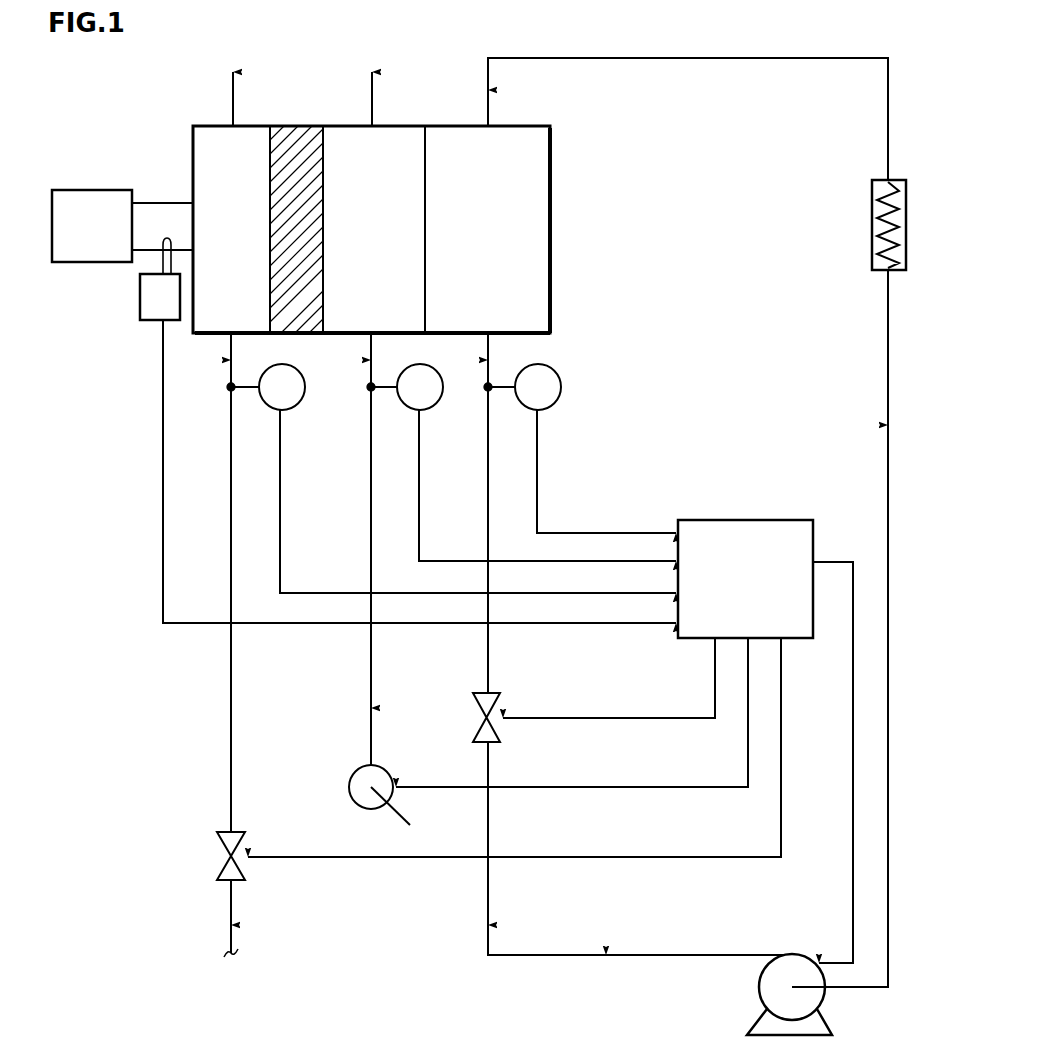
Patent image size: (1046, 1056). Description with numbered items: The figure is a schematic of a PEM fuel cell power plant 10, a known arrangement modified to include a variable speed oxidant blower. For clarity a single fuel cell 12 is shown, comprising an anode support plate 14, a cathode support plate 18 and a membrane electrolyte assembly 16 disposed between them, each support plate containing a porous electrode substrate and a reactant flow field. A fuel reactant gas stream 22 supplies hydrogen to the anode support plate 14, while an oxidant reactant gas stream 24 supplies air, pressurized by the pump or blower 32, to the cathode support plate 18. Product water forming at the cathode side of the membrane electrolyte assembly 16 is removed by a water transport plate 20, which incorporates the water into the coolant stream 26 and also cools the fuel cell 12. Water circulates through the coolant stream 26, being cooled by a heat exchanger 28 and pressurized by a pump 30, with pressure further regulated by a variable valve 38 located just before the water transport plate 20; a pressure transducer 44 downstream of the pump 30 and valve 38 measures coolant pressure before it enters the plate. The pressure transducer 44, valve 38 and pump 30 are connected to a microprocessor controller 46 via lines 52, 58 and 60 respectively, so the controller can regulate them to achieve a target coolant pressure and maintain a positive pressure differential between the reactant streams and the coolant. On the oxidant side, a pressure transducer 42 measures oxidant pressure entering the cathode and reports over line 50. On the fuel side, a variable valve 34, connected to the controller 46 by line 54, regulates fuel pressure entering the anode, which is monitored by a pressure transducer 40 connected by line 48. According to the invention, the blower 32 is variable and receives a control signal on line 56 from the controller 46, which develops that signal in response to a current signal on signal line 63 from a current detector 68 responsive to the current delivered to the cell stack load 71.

The PEM fuel cell power plant 10 is at (128, 103).
The fuel cell 12 is at (192, 124).
The anode support plate 14 is at (222, 293).
The membrane electrolyte assembly 16 is at (286, 293).
The cathode support plate 18 is at (361, 293).
The water transport plate 20 is at (476, 293).
The fuel reactant gas stream 22 is at (229, 427).
The oxidant reactant gas stream 24 is at (370, 427).
The coolant stream 26 is at (487, 427).
The heat exchanger 28 is at (869, 206).
The pump 30 is at (790, 948).
The pump or blower 32 is at (350, 768).
The variable valve 34 is at (216, 852).
The variable valve 38 is at (470, 710).
The pressure transducer 40 is at (298, 372).
The pressure transducer 42 is at (437, 372).
The pressure transducer 44 is at (556, 375).
The controller 46 is at (735, 519).
The line 48 is at (282, 562).
The line 50 is at (421, 540).
The line 52 is at (539, 512).
The line 54 is at (655, 860).
The line 56 is at (655, 790).
The line 58 is at (655, 722).
The line 60 is at (849, 730).
The signal line 63 is at (165, 583).
The current detector 68 is at (149, 306).
The load 71 is at (95, 190).